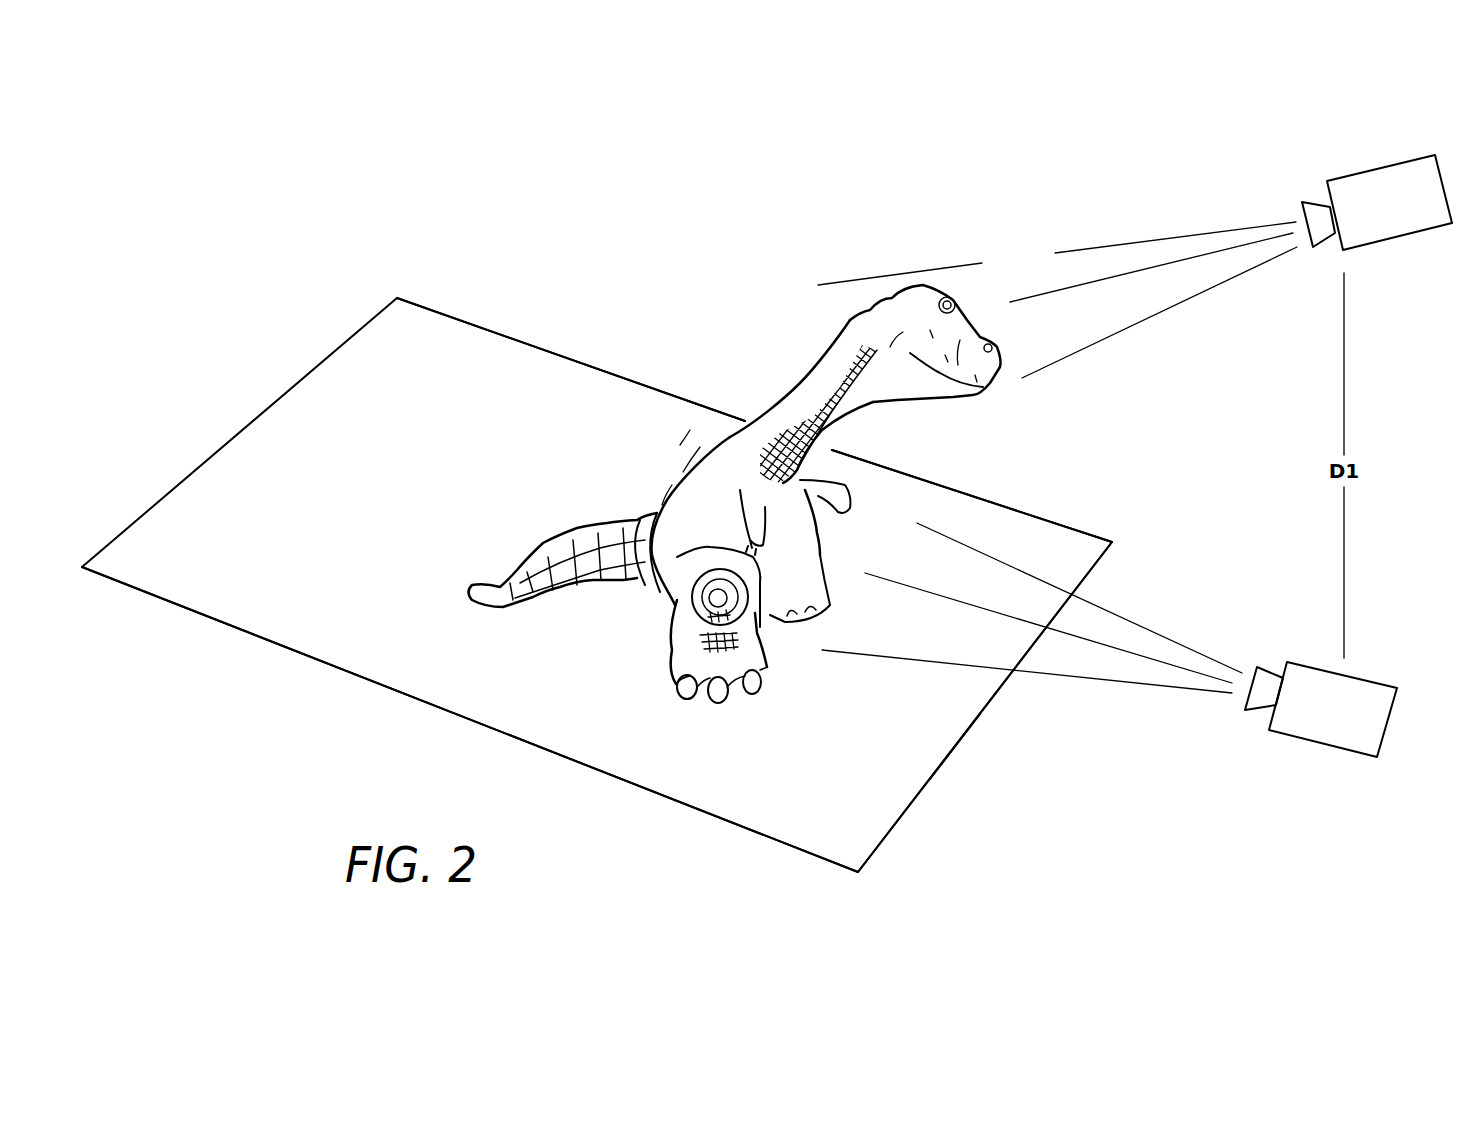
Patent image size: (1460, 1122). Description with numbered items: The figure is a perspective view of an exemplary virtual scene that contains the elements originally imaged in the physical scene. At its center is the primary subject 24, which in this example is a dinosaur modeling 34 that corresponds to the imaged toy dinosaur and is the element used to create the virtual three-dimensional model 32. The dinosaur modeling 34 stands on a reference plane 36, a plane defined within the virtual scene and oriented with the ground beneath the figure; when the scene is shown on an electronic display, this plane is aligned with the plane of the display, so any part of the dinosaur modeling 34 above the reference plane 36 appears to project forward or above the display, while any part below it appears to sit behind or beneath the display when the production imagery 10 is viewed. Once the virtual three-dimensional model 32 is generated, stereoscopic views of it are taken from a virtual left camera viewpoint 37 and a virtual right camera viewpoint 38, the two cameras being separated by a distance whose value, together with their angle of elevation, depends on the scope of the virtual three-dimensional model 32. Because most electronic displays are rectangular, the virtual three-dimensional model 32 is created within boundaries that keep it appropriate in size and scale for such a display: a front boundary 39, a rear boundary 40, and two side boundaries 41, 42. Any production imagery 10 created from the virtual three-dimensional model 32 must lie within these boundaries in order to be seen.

The production imagery 10 is at (555, 245).
The primary subject 24 is at (813, 398).
The virtual 3D model 32 is at (735, 482).
The dinosaur modeling 34 is at (752, 420).
The reference plane 36 is at (917, 732).
The virtual left camera viewpoint 37 is at (1338, 747).
The virtual right camera viewpoint 38 is at (1357, 170).
The front boundary 39 is at (985, 707).
The rear boundary 40 is at (268, 407).
The side boundary 41 is at (657, 795).
The side boundary 42 is at (993, 503).